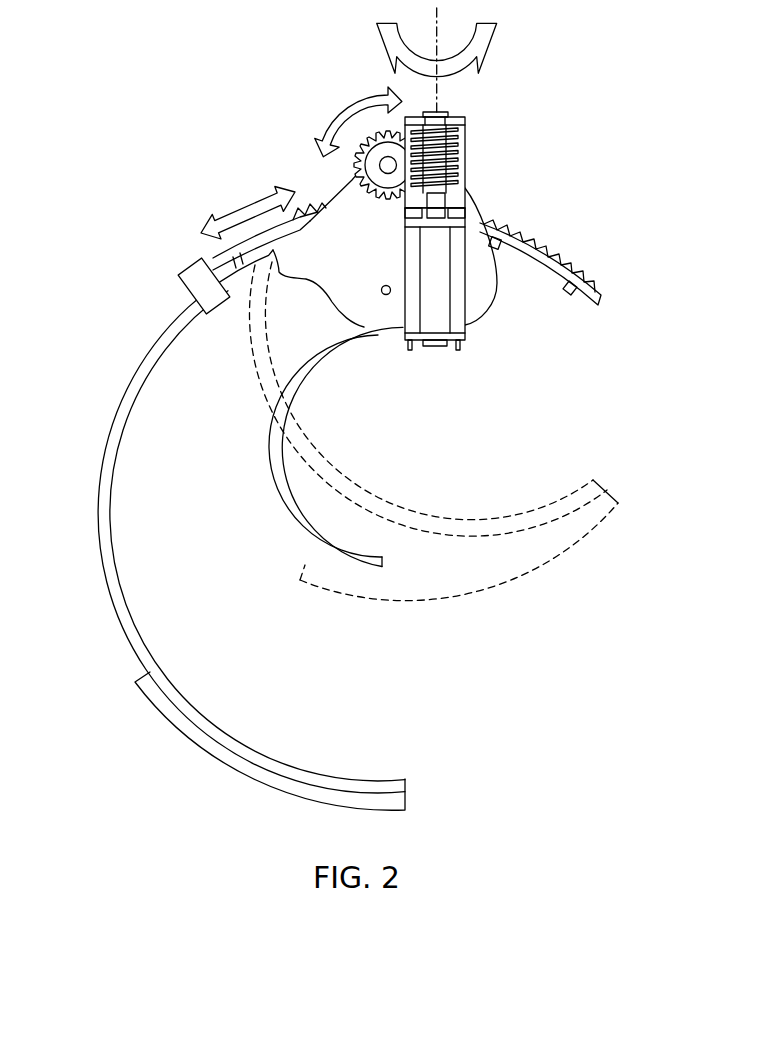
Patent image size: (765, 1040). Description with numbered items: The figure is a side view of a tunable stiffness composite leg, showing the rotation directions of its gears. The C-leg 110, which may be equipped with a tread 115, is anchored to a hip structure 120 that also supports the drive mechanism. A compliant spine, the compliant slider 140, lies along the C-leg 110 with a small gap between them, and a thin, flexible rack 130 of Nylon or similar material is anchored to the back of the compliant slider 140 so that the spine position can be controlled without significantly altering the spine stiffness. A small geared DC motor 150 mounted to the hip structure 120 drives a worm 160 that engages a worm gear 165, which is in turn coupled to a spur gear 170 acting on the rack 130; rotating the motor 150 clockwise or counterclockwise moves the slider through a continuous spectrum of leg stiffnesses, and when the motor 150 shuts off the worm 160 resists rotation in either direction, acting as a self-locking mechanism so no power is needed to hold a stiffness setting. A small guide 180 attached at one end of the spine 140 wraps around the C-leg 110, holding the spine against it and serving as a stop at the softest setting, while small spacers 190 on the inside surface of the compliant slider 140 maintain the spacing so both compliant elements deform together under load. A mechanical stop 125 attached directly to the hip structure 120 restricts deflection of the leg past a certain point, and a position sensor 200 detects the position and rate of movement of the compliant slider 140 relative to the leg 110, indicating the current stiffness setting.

The C-leg 110 is at (114, 497).
The tread 115 is at (214, 764).
The hip structure 120 is at (312, 292).
The mechanical stop 125 is at (284, 478).
The flexible rack 130 is at (568, 246).
The compliant slider 140 is at (211, 257).
The geared DC motor 150 is at (423, 350).
The worm 160 is at (462, 166).
The worm gear 165 is at (383, 200).
The spur gear 170 is at (338, 167).
The guide 180 is at (181, 289).
The spacers 190 is at (567, 293).
The position sensor 200 is at (467, 117).